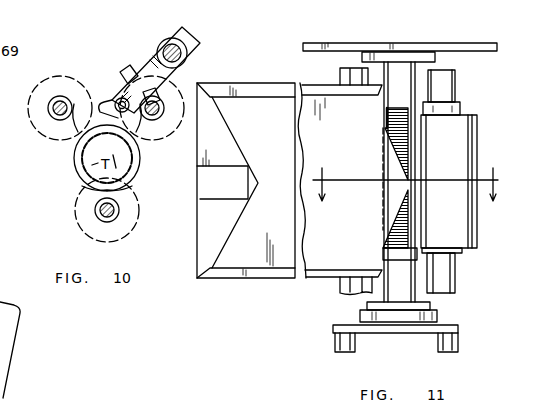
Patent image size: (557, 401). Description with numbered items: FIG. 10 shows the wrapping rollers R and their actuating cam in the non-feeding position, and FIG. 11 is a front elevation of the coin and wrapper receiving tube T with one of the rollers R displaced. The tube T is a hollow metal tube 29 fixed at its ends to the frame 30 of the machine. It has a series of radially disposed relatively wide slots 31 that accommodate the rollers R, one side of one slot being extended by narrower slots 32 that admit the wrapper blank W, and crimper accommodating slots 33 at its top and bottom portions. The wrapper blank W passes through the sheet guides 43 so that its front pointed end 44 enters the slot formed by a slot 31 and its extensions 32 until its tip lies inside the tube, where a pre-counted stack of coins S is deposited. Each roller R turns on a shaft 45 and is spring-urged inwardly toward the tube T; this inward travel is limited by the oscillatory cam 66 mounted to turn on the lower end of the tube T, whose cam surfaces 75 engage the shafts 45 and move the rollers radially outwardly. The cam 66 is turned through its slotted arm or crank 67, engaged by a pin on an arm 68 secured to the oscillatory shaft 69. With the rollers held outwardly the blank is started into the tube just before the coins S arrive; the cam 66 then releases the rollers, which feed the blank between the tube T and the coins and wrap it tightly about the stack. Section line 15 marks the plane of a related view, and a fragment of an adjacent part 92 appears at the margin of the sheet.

In FIG. 11, the section line 15 is at (407, 175).
In FIG. 11, the hollow metal tube 29 is at (420, 70).
In FIG. 11, the frame 30 is at (464, 43).
In FIG. 10, the radially disposed relatively wide slots 31 is at (107, 158).
In FIG. 11, the radially disposed relatively wide slots 31 is at (408, 232).
In FIG. 11, the narrower slots 32 is at (383, 127).
In FIG. 11, the crimper accommodating slots 33 is at (415, 84).
In FIG. 11, the sheet guides 43 is at (216, 172).
In FIG. 11, the front pointed end 44 is at (402, 170).
In FIG. 10, the shaft 45 is at (52, 109).
In FIG. 11, the oscillatory cam 66 is at (438, 314).
In FIG. 10, the slotted arm or crank 67 is at (108, 96).
In FIG. 10, the arm 68 is at (141, 63).
In FIG. 10, the oscillatory shaft 69 is at (187, 51).
In FIG. 10, the cam surfaces 75 is at (74, 100).
In FIG. 10, the adjacent member 92 is at (11, 390).
In FIG. 10, the wrapper rollers R is at (57, 97).
In FIG. 11, the wrapper rollers R is at (478, 240).
In FIG. 11, the stack of coins S is at (393, 111).
In FIG. 11, the coin and wrapper receiving tube T is at (420, 294).
In FIG. 11, the wrapper blank W is at (223, 247).